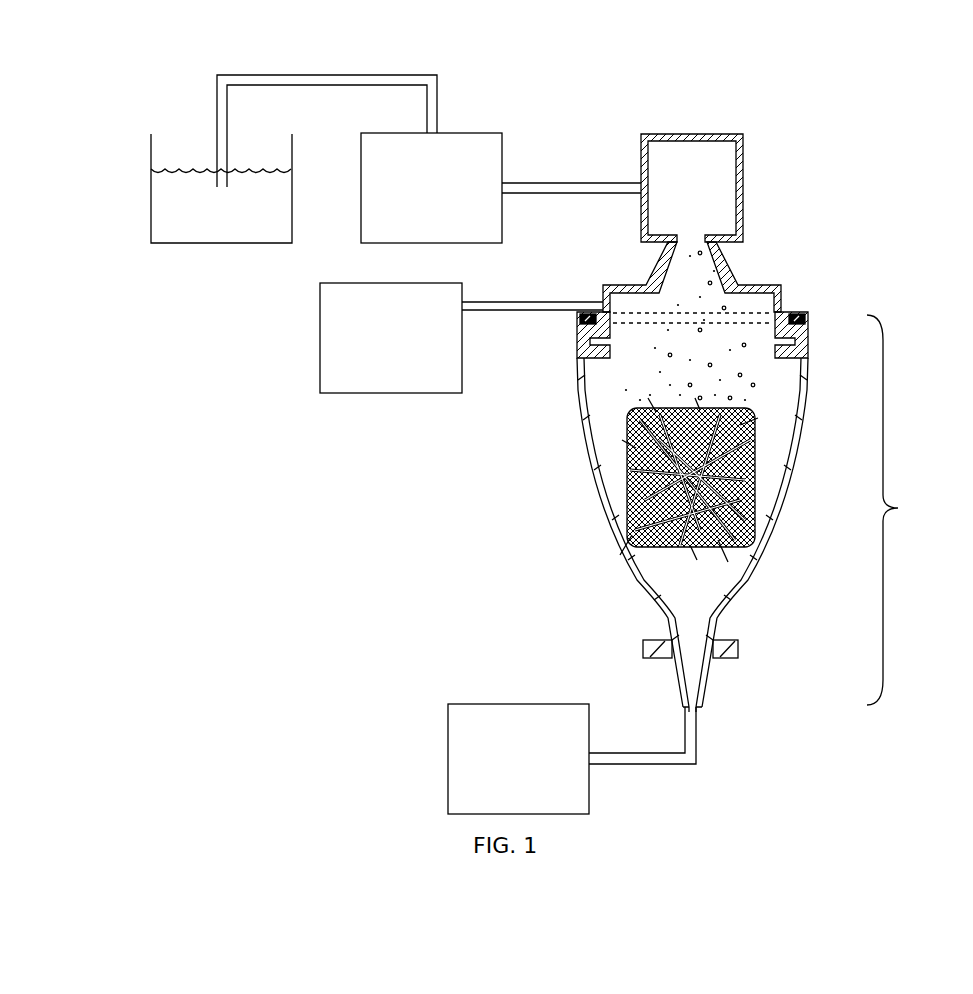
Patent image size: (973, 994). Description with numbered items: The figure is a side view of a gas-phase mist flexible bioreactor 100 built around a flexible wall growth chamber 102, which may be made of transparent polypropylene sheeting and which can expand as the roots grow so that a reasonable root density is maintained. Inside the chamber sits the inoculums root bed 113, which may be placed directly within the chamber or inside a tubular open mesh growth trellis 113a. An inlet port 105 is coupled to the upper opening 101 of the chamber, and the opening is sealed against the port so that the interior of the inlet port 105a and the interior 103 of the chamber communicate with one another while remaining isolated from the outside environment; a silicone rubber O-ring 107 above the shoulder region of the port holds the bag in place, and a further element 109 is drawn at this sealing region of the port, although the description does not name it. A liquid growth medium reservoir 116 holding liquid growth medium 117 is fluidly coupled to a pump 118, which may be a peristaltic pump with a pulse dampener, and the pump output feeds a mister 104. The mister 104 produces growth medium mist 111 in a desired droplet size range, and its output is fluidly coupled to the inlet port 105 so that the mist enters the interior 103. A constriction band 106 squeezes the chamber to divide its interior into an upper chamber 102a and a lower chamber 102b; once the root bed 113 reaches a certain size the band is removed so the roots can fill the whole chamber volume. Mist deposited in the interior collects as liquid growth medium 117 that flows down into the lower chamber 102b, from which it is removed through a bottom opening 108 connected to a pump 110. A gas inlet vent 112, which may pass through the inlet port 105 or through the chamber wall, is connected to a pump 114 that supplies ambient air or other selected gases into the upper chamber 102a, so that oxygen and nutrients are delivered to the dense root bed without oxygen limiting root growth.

The flexible bioreactor 100 is at (853, 104).
The upper opening 101 is at (755, 333).
The flexible wall growth chamber 102 is at (898, 510).
The upper chamber 102a is at (613, 368).
The lower chamber 102b is at (697, 685).
The interior 103 is at (711, 576).
The mister 104 is at (710, 198).
The inlet port 105 is at (695, 262).
The interior of the inlet port 105a is at (712, 355).
The constriction band 106 is at (738, 650).
The silicone rubber O-ring 107 is at (783, 317).
The bottom opening 108 is at (687, 710).
The flange 109 is at (800, 352).
The pump 110 is at (531, 770).
The growth medium mist 111 is at (680, 281).
The gas inlet vent 112 is at (605, 306).
The root bed 113 is at (633, 477).
The tubular open mesh growth trellis 113a is at (625, 513).
The pump 114 is at (405, 348).
The liquid growth medium reservoir 116 is at (151, 153).
The liquid growth medium 117 is at (236, 220).
The pump 118 is at (446, 198).